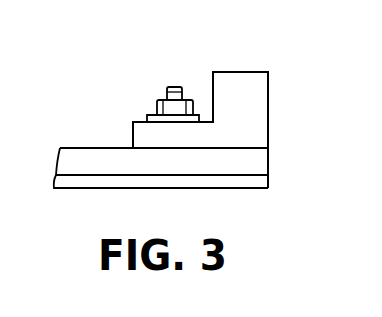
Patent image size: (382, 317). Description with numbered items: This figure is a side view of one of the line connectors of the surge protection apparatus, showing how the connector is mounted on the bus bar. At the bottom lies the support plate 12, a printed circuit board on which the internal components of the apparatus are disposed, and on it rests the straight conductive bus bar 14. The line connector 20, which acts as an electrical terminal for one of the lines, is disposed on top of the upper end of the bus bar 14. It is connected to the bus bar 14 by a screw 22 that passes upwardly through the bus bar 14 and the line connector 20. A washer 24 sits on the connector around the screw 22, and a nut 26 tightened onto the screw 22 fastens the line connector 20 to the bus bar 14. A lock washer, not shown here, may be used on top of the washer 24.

The support plate 12 is at (98, 182).
The conductive bus bar 14 is at (87, 160).
The line connector 20 is at (233, 71).
The screw 22 is at (174, 87).
The washer 24 is at (147, 118).
The nut 26 is at (156, 108).